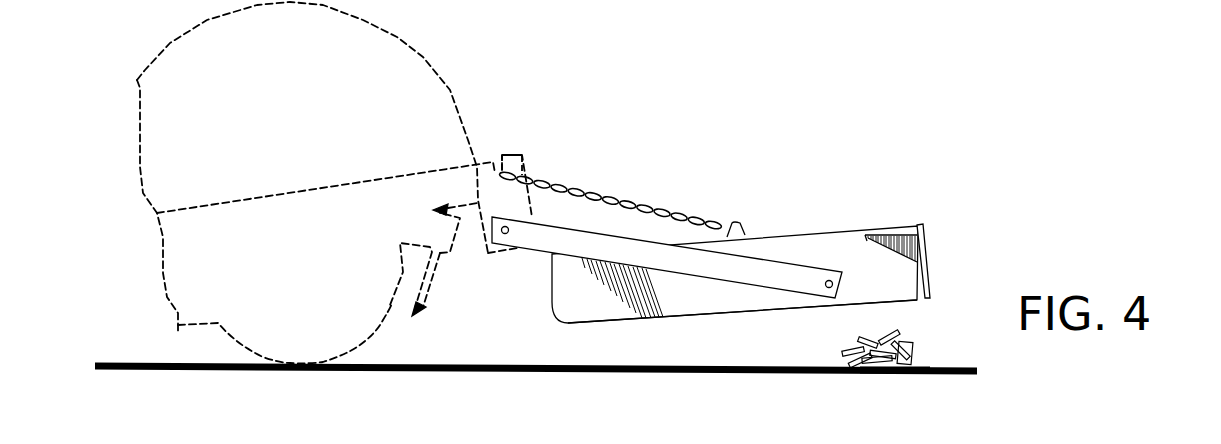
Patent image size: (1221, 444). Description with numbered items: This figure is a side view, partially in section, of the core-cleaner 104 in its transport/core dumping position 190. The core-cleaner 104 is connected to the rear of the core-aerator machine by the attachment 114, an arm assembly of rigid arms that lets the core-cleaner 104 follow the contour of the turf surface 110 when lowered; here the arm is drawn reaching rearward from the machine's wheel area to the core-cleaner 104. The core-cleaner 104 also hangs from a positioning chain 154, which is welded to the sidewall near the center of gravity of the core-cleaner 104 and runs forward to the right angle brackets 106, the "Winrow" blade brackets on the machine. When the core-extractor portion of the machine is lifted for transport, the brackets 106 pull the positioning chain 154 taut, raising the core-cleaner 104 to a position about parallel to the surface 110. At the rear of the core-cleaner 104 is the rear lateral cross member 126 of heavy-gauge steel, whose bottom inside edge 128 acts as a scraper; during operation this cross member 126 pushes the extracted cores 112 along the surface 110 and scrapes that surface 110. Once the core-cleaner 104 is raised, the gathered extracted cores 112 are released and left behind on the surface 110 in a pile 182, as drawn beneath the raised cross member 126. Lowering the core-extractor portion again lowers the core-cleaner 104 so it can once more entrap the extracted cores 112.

The core-cleaner 104 is at (418, 53).
The right angle brackets 106 is at (508, 150).
The surface 110 is at (563, 373).
The extracted cores 112 is at (890, 375).
The attachment 114 is at (693, 277).
The rear lateral cross member 126 is at (933, 267).
The bottom inside edge 128 is at (923, 303).
The positioning chain 154 is at (607, 197).
The pile 182 is at (895, 338).
The transport/core dumping position 190 is at (829, 203).